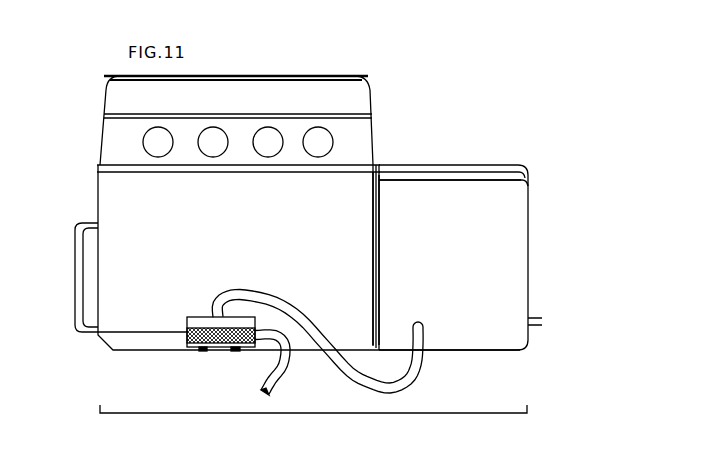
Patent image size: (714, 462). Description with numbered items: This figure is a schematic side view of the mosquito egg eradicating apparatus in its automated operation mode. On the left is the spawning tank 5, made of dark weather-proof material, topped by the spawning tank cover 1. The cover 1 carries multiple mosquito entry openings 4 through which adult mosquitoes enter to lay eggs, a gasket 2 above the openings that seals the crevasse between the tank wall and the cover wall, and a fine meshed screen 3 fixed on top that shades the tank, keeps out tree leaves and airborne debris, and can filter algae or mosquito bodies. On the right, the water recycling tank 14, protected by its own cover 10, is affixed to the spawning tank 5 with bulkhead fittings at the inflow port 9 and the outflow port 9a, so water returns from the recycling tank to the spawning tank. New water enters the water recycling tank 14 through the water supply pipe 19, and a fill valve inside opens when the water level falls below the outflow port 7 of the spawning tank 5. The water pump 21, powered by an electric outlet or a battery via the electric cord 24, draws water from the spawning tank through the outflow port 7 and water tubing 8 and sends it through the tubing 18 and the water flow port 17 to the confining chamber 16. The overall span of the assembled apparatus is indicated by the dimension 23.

The lid 1 is at (112, 92).
The lid seam line 2 is at (104, 114).
The lid top 3 is at (338, 76).
The ventilation holes 4 is at (104, 138).
The container body 5 is at (98, 187).
The handle 7 is at (75, 223).
The handle inner part 8 is at (75, 262).
The partition wall 9 is at (373, 222).
The partition wall portion 9a is at (378, 212).
The reservoir top rim 10 is at (508, 171).
The water reservoir 14 is at (505, 245).
The hose 16 is at (317, 342).
The hose inlet end 17 is at (425, 330).
The outlet hose 18 is at (286, 362).
The reservoir port 19 is at (543, 322).
The pump 21 is at (220, 352).
The overall width dimension 23 is at (308, 414).
The outflow direction 24 is at (270, 390).